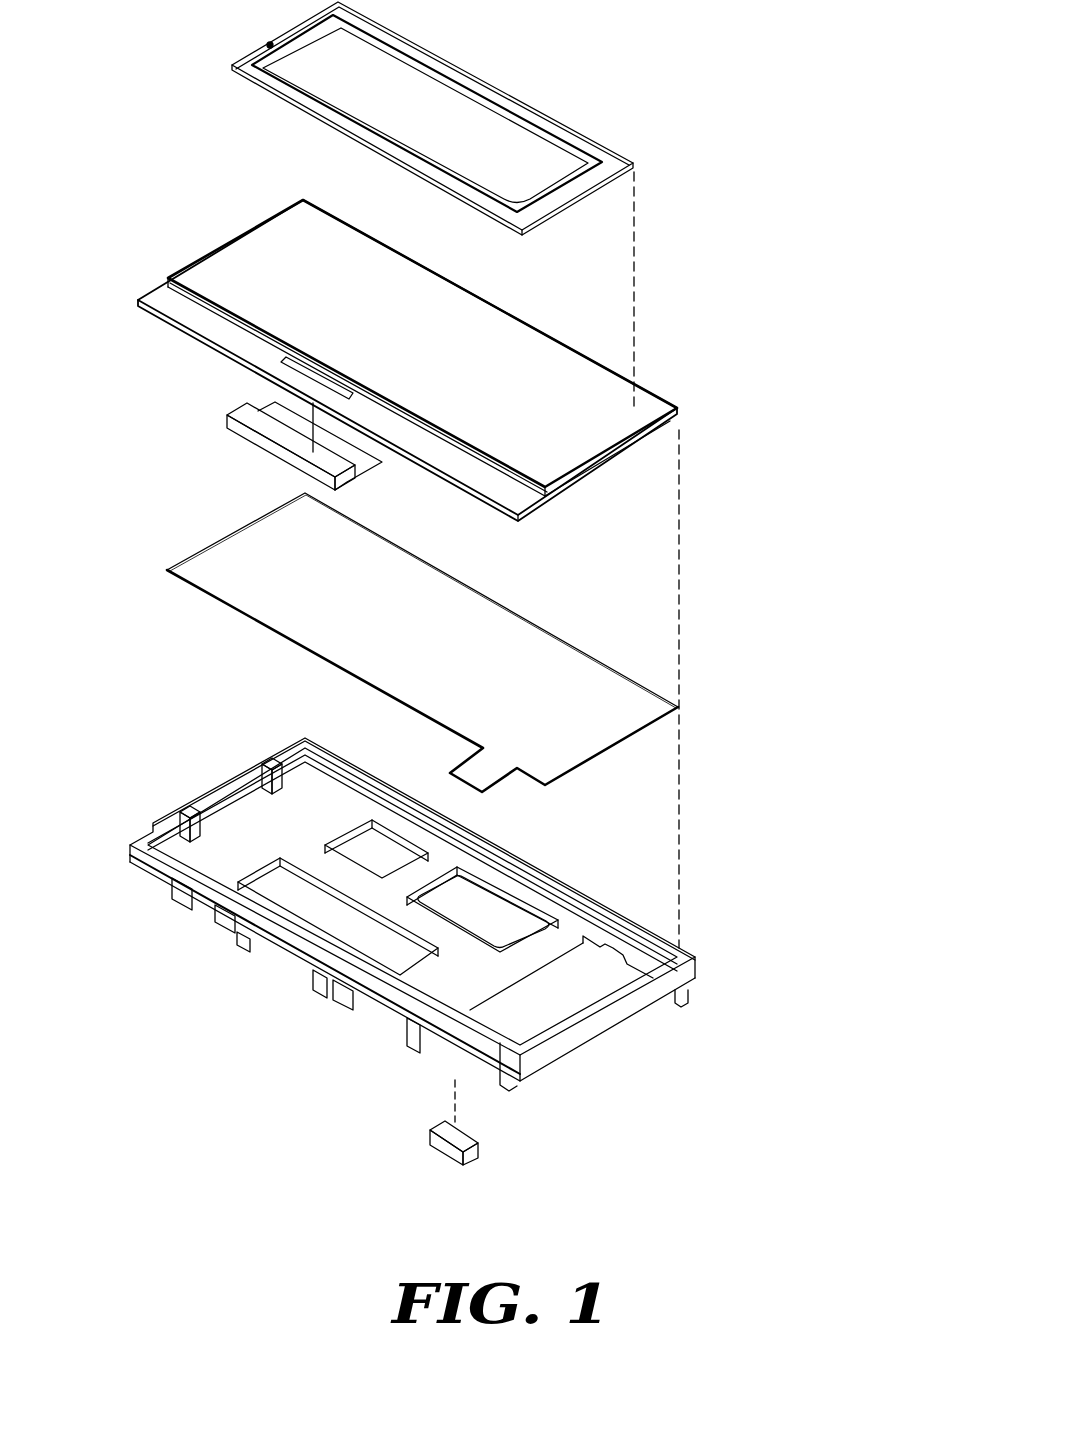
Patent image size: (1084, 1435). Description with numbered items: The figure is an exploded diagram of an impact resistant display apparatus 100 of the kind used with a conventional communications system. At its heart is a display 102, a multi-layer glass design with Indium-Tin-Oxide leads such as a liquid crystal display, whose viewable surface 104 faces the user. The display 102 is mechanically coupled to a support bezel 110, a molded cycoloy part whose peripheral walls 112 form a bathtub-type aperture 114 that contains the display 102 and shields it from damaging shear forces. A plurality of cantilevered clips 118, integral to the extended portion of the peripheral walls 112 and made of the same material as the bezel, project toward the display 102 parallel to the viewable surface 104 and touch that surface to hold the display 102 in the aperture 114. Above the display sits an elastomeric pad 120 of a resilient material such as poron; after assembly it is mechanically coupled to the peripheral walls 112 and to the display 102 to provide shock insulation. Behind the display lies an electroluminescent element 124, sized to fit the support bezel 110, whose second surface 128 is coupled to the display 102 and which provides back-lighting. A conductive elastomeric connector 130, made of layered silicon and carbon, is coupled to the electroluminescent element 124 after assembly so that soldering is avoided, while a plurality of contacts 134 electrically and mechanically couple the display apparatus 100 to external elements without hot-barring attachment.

The display apparatus 100 is at (616, 1233).
The display 102 is at (487, 360).
The viewable surface 104 is at (499, 346).
The support bezel 110 is at (485, 914).
The peripheral walls 112 is at (213, 900).
The aperture 114 is at (253, 843).
The cantilevered clips 118 is at (197, 810).
The elastomeric pad 120 is at (510, 118).
The electroluminescent element 124 is at (522, 642).
The second surface 128 is at (508, 601).
The conductive elastomeric connector 130 is at (629, 1093).
The contacts 134 is at (212, 446).